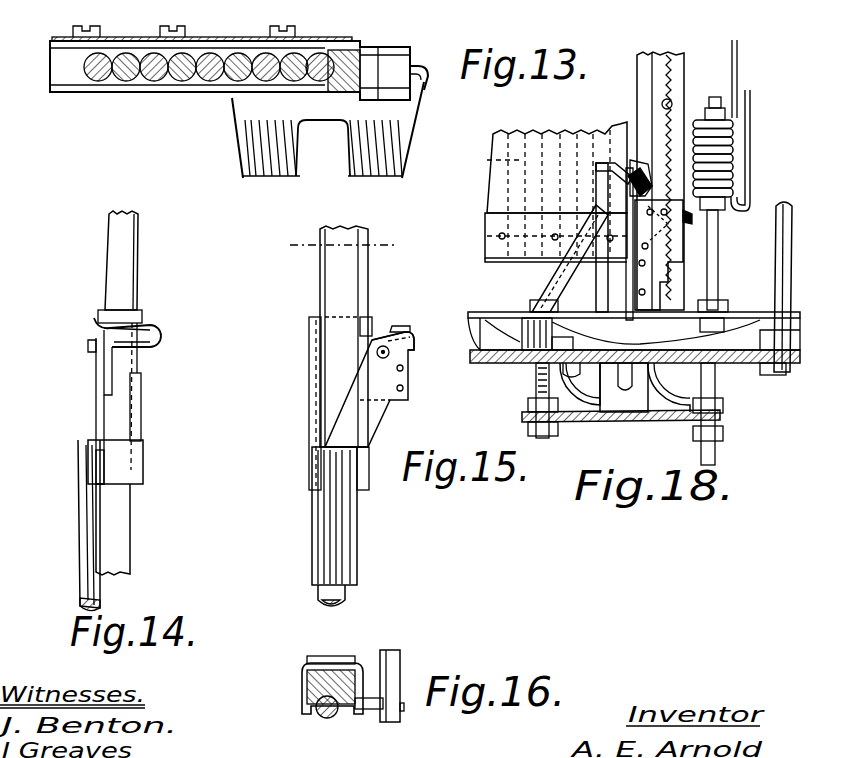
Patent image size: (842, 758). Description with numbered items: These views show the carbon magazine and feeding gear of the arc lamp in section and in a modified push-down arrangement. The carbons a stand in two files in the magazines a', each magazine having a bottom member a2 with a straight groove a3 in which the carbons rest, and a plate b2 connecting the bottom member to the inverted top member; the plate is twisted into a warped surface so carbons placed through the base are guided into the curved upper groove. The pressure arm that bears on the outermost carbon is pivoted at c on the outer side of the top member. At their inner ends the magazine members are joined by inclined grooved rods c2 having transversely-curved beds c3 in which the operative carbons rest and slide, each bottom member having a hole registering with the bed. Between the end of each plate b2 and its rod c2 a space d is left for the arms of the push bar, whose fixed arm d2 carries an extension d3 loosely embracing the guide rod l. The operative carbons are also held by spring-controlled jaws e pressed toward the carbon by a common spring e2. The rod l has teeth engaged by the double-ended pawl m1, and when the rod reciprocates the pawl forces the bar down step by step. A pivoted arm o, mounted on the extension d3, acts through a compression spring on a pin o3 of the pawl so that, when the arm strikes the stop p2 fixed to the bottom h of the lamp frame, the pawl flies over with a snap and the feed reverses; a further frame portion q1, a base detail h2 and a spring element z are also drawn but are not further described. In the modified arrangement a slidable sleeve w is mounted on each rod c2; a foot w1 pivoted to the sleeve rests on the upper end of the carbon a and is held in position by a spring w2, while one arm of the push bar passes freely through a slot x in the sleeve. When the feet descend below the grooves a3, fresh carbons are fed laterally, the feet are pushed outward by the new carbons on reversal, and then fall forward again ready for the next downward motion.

In FIG. 13, the carbons a is at (230, 70).
In FIG. 14, the carbons a is at (100, 525).
In FIG. 15, the carbons a is at (342, 528).
In FIG. 16, the carbons a is at (321, 720).
In FIG. 18, the carbons a is at (635, 309).
In FIG. 13, the magazines a' is at (209, 89).
In FIG. 18, the magazines a' is at (475, 204).
In FIG. 13, the bottom member a2 is at (395, 50).
In FIG. 18, the bottom member a2 is at (538, 250).
In FIG. 13, the straight groove a3 is at (210, 73).
In FIG. 13, the plate b2 is at (222, 40).
In FIG. 18, the plate b2 is at (557, 189).
In FIG. 15, the pivot c is at (343, 245).
In FIG. 13, the inclined grooved rods c2 is at (348, 50).
In FIG. 14, the inclined grooved rods c2 is at (134, 258).
In FIG. 15, the inclined grooved rods c2 is at (369, 285).
In FIG. 16, the inclined grooved rods c2 is at (305, 676).
In FIG. 18, the inclined grooved rods c2 is at (640, 100).
In FIG. 13, the transversely-curved beds c3 is at (342, 92).
In FIG. 15, the transversely-curved beds c3 is at (348, 295).
In FIG. 16, the transversely-curved beds c3 is at (303, 690).
In FIG. 18, the space d is at (630, 140).
In FIG. 18, the fixed arm of push bar d2 is at (634, 290).
In FIG. 18, the extension d3 is at (699, 214).
In FIG. 13, the spring-controlled jaws e is at (426, 70).
In FIG. 13, the jaw spring e2 is at (300, 154).
In FIG. 18, the bottom of lamp frame h is at (634, 331).
In FIG. 18, the channel curve h2 is at (610, 336).
In FIG. 18, the guide rod l is at (680, 90).
In FIG. 18, the pin m is at (672, 110).
In FIG. 18, the pawl m1 is at (655, 192).
In FIG. 18, the pivoted arm o is at (607, 160).
In FIG. 18, the pin o3 is at (652, 254).
In FIG. 18, the stop p2 is at (597, 182).
In FIG. 18, the upright bar q1 is at (775, 228).
In FIG. 14, the slidable sleeve w is at (130, 410).
In FIG. 15, the slidable sleeve w is at (311, 405).
In FIG. 16, the slidable sleeve w is at (322, 665).
In FIG. 14, the pivoted arm or foot w1 is at (95, 410).
In FIG. 15, the pivoted arm or foot w1 is at (372, 404).
In FIG. 16, the pivoted arm or foot w1 is at (368, 712).
In FIG. 14, the spring w2 is at (162, 336).
In FIG. 15, the spring w2 is at (392, 334).
In FIG. 16, the spring w2 is at (400, 672).
In FIG. 14, the slot x is at (141, 398).
In FIG. 18, the spring z is at (733, 138).